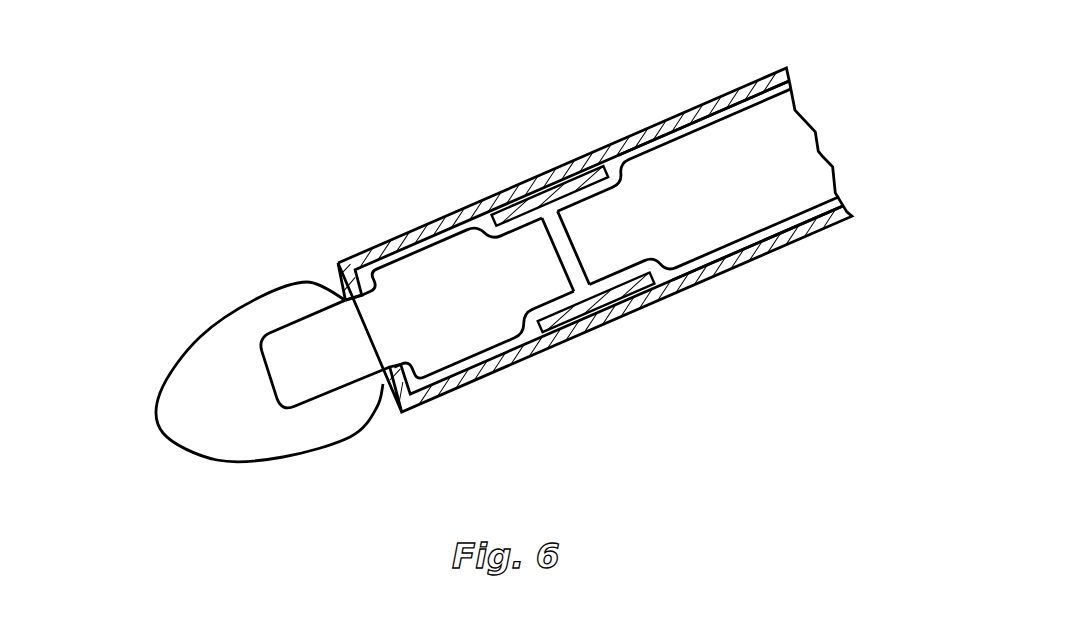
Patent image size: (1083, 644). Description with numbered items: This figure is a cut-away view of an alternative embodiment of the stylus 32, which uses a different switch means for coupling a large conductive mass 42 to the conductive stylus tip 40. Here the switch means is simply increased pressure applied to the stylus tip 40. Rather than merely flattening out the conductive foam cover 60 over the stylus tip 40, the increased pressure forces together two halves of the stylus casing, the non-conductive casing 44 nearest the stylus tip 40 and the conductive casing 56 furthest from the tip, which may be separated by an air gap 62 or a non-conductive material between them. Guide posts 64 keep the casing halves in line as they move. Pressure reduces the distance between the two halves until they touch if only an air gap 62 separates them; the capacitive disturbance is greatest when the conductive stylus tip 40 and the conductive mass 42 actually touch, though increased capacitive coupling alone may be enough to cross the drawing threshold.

The stylus 32 is at (245, 246).
The conductive stylus tip 40 is at (321, 354).
The large conductive mass 42 is at (592, 241).
The non-conductive casing 44 is at (597, 237).
The conductive casing 56 is at (730, 180).
The conductive foam cover 60 is at (172, 432).
The air gap 62 is at (565, 251).
The guide posts 64 is at (573, 249).